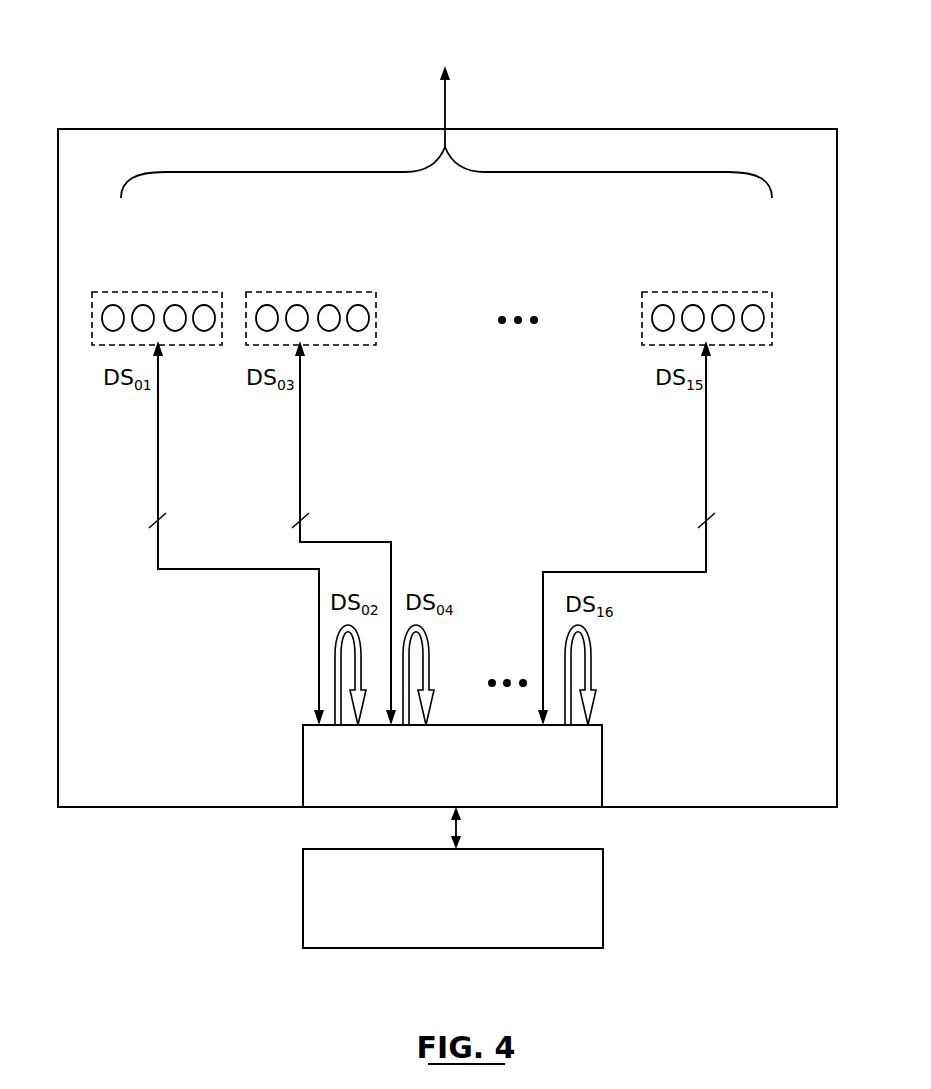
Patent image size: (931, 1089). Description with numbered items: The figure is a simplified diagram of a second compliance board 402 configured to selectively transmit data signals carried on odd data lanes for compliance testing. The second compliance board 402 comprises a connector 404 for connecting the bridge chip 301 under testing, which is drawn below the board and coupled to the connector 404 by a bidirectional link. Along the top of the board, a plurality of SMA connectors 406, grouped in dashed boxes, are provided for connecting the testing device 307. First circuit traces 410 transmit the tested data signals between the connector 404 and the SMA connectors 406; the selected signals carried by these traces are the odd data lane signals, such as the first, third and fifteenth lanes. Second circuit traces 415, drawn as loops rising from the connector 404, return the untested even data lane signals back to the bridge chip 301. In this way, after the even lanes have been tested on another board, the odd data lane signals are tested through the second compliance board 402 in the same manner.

The bridge chip 301 is at (437, 930).
The testing device 307 is at (446, 101).
The second compliance board 402 is at (782, 795).
The connector 404 is at (437, 796).
The SMA connectors 406 is at (143, 305).
The first circuit traces 410 is at (205, 569).
The second circuit traces 415 is at (335, 658).